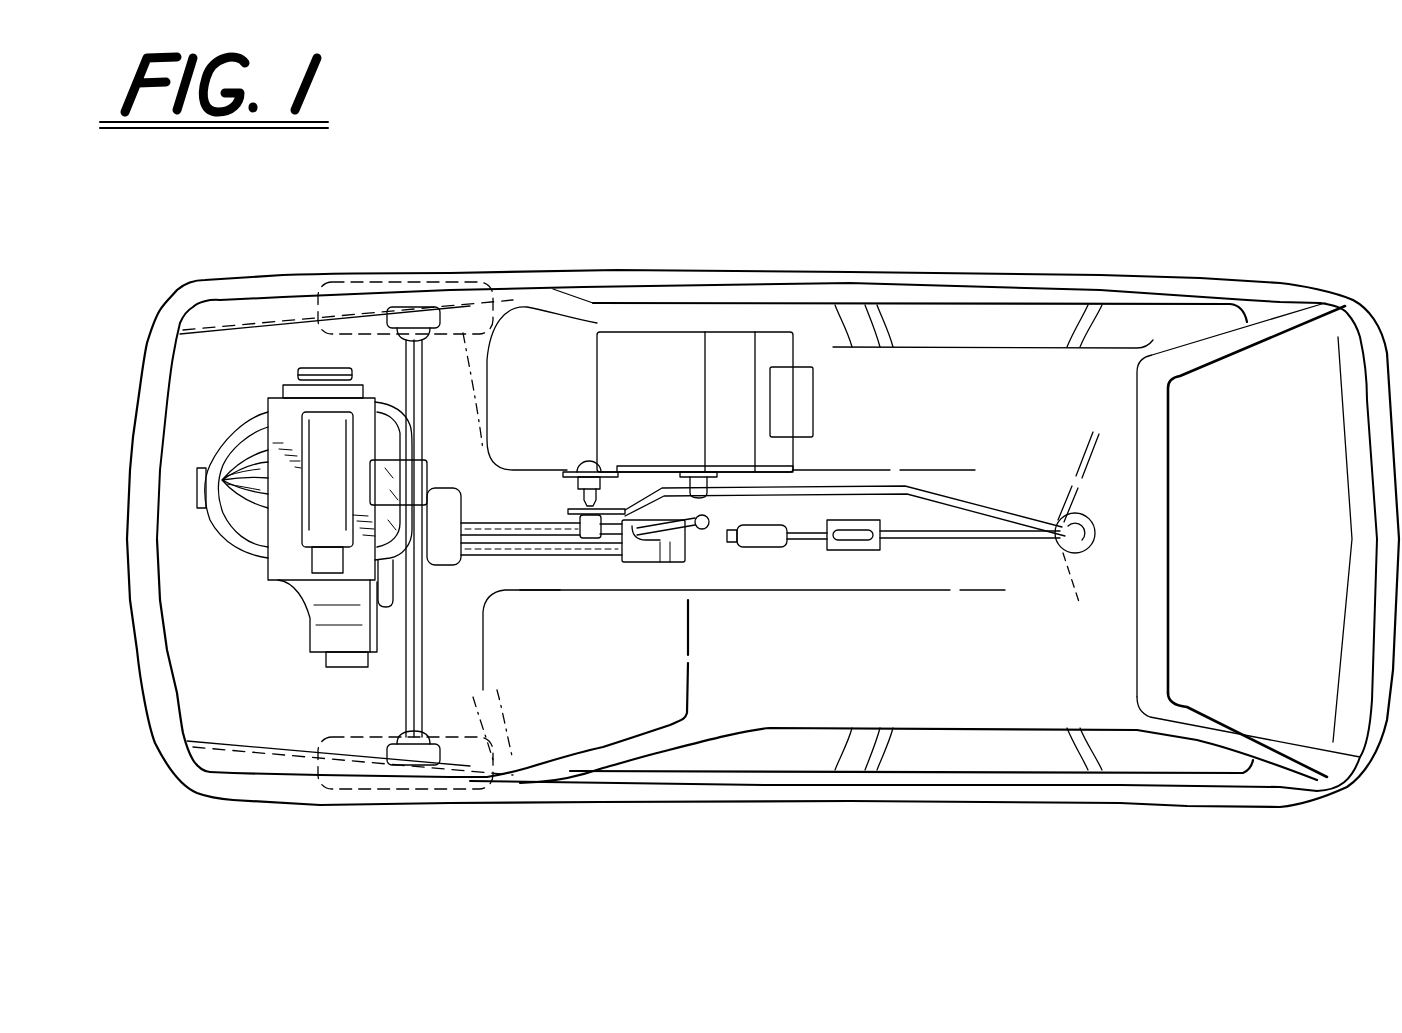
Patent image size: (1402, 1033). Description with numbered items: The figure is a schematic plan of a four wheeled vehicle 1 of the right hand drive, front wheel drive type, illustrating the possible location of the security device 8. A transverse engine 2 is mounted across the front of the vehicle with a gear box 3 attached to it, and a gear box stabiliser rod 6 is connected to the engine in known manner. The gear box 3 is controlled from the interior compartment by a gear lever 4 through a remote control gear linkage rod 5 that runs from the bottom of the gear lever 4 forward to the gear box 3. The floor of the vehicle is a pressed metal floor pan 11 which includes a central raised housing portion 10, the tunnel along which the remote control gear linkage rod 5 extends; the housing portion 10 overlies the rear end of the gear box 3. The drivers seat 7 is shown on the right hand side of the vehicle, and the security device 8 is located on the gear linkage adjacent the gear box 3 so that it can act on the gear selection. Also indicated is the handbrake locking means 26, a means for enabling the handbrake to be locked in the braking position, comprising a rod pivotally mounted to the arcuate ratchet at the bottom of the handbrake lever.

The four wheeled vehicle 1 is at (1036, 270).
The transverse engine 2 is at (290, 557).
The gear box 3 is at (327, 638).
The gear lever 4 is at (672, 564).
The remote control gear linkage rod 5 is at (488, 524).
The gear box stabiliser rod 6 is at (497, 558).
The drivers seat 7 is at (661, 412).
The security device 8 is at (575, 494).
The housing portion 10 is at (551, 591).
The floor pan 11 is at (559, 431).
The handbrake locking means 26 is at (864, 489).